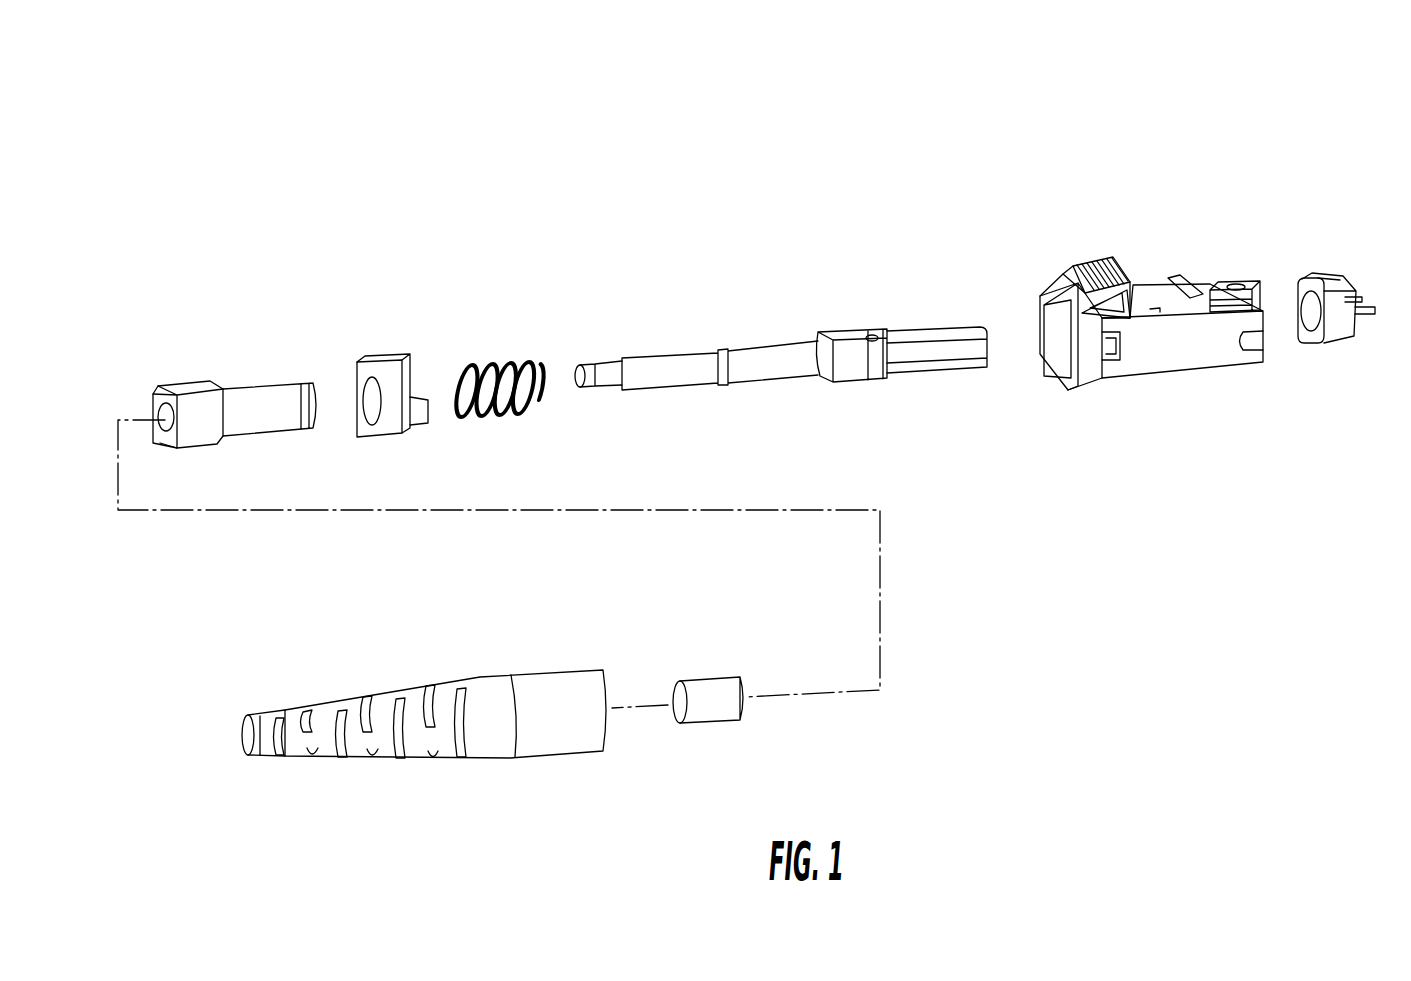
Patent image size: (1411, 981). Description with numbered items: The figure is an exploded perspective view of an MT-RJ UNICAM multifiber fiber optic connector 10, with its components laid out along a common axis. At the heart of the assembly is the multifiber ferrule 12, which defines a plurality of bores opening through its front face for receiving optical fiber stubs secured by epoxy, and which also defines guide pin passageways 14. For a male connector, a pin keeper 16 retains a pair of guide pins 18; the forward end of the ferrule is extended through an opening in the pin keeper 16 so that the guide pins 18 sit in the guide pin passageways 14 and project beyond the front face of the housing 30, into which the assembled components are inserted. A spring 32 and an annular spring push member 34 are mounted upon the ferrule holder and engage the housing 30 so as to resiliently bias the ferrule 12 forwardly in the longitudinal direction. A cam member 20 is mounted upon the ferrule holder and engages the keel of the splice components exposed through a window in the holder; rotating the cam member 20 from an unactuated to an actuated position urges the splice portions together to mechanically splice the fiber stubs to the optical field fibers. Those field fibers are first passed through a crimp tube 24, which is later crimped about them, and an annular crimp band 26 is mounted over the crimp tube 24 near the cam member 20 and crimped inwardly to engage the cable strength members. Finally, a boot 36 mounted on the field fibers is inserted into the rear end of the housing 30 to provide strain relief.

The MT-RJ UNICAM connector 10 is at (1004, 132).
The multifiber ferrule 12 is at (922, 333).
The guide pin passageways 14 is at (953, 360).
The pin keeper 16 is at (1337, 290).
The guide pins 18 is at (1368, 308).
The cam member 20 is at (188, 386).
The crimp tube 24 is at (601, 385).
The annular crimp band 26 is at (722, 680).
The housing 30 is at (1151, 275).
The spring 32 is at (508, 367).
The annular spring push member 34 is at (372, 362).
The boot 36 is at (555, 755).